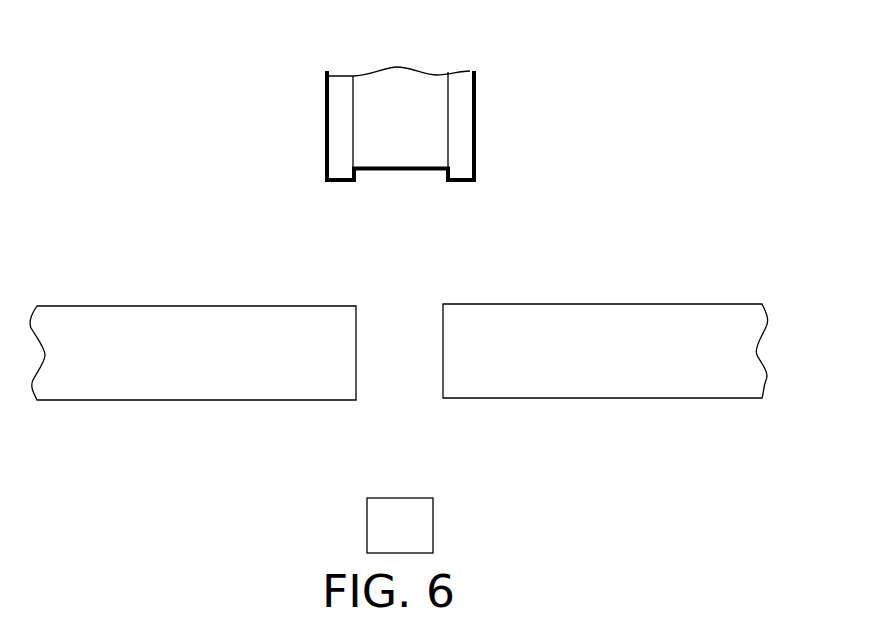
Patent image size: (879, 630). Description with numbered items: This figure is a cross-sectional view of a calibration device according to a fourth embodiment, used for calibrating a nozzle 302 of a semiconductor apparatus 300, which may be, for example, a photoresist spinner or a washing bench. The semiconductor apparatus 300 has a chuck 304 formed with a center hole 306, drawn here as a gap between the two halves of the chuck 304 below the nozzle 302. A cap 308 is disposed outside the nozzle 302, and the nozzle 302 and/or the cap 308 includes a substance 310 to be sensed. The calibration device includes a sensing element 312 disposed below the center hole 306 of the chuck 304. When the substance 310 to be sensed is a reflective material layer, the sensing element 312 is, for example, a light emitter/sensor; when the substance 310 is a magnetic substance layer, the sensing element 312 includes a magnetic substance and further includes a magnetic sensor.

The semiconductor apparatus 300 is at (724, 587).
The nozzle 302 is at (425, 124).
The chuck 304 is at (708, 320).
The center hole 306 is at (418, 312).
The cap 308 is at (457, 80).
The substance to be sensed 310 is at (325, 97).
The sensing element 312 is at (422, 530).